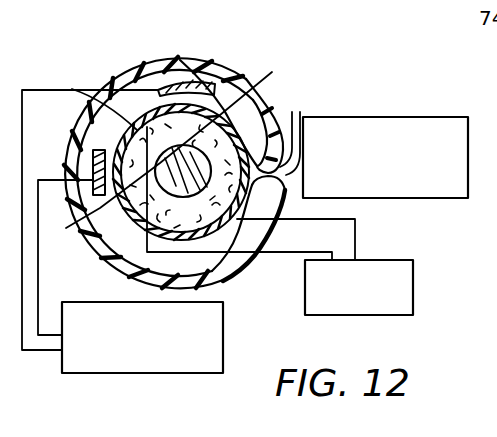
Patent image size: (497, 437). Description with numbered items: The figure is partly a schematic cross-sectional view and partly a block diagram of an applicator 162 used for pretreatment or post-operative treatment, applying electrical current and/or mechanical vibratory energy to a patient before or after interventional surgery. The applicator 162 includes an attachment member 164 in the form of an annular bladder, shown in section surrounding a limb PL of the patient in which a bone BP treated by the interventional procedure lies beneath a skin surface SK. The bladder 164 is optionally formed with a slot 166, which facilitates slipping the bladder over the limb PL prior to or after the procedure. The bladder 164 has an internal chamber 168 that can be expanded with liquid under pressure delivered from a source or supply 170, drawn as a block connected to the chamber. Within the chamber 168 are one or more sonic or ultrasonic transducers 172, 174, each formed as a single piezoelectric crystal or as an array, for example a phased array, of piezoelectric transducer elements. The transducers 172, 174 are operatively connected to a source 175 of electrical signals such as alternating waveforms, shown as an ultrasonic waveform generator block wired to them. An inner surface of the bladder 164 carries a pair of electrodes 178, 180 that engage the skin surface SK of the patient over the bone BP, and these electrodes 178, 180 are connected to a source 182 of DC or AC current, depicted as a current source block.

The applicator 162 is at (95, 50).
The attachment member 164 is at (90, 240).
The slot 166 is at (355, 114).
The internal chamber 168 is at (211, 265).
The source or supply 170 is at (408, 199).
The sonic or ultrasonic transducer 172 is at (92, 163).
The sonic or ultrasonic transducer 174 is at (173, 83).
The source of electrical signals 175 is at (108, 374).
The electrode 178 is at (73, 92).
The electrode 180 is at (270, 236).
The source of DC or AC current 182 is at (414, 283).
The skin surface SK is at (156, 157).
The limb PL is at (230, 86).
The bone BP is at (245, 107).